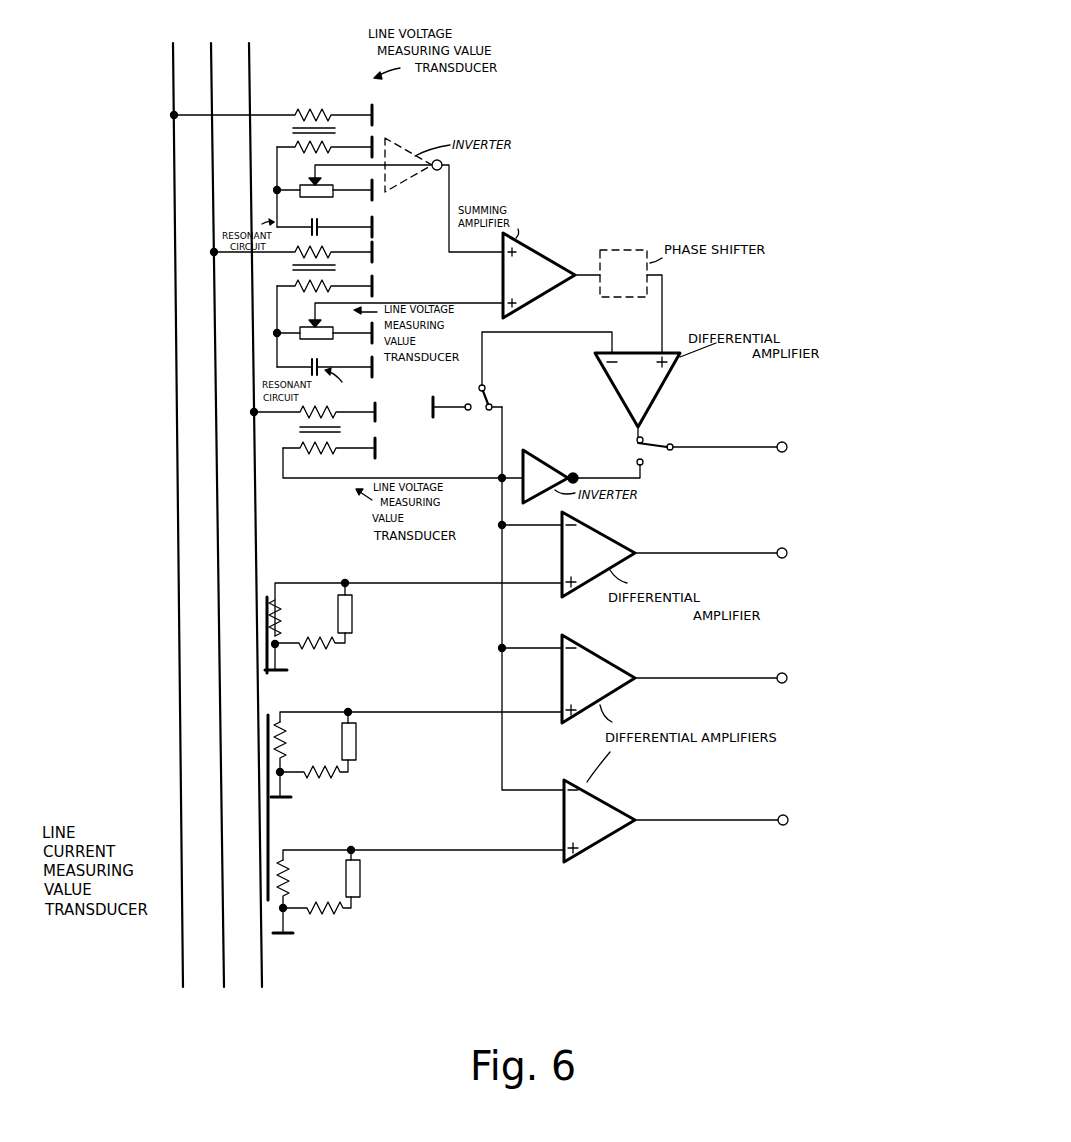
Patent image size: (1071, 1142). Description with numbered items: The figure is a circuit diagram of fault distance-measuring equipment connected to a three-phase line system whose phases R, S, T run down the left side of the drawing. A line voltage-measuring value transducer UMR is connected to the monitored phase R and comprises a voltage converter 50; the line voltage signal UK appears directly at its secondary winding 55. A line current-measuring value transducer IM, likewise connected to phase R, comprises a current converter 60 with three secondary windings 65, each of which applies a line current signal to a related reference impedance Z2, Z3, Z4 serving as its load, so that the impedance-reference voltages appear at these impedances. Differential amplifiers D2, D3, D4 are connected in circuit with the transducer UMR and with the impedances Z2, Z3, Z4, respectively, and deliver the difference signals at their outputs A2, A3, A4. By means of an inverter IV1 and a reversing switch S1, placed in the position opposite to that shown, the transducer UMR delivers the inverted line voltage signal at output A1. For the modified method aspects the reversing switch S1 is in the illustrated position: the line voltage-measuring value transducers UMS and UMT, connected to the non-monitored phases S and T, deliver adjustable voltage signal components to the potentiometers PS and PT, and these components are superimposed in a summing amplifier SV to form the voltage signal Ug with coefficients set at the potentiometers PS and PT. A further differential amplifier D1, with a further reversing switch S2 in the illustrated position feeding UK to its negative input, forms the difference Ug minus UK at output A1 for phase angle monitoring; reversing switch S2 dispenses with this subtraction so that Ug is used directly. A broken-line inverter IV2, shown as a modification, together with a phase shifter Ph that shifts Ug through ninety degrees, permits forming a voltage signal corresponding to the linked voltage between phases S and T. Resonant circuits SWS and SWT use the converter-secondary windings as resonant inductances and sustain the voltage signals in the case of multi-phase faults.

The phase T is at (173, 497).
The phase S is at (213, 497).
The phase R is at (251, 497).
The line voltage-measuring value transducer UMT is at (358, 94).
The line voltage-measuring value transducer UMS is at (441, 284).
The line voltage-measuring value transducer UMR is at (387, 452).
The potentiometer PT is at (328, 198).
The potentiometer PS is at (328, 340).
The resonant circuit SWT is at (307, 219).
The resonant circuit SWS is at (304, 360).
The secondary winding 55 is at (340, 408).
The voltage converter 50 is at (350, 456).
The inverter IV2 is at (413, 152).
The inverter IV1 is at (545, 455).
The summing amplifier SV is at (540, 251).
The phase shifter Ph is at (628, 248).
The differential amplifier D1 is at (664, 387).
The differential amplifier D2 is at (612, 538).
The differential amplifier D3 is at (612, 661).
The differential amplifier D4 is at (606, 801).
The reversing switch S1 is at (652, 441).
The reversing switch S2 is at (485, 394).
The output A1 is at (747, 452).
The output A2 is at (729, 559).
The output A3 is at (729, 684).
The output A4 is at (729, 826).
The line current-measuring value transducer IM is at (332, 735).
The reference impedance Z2 is at (413, 627).
The reference impedance Z3 is at (415, 805).
The reference impedance Z4 is at (418, 890).
The secondary windings 65 is at (279, 583).
The current converter 60 is at (327, 797).